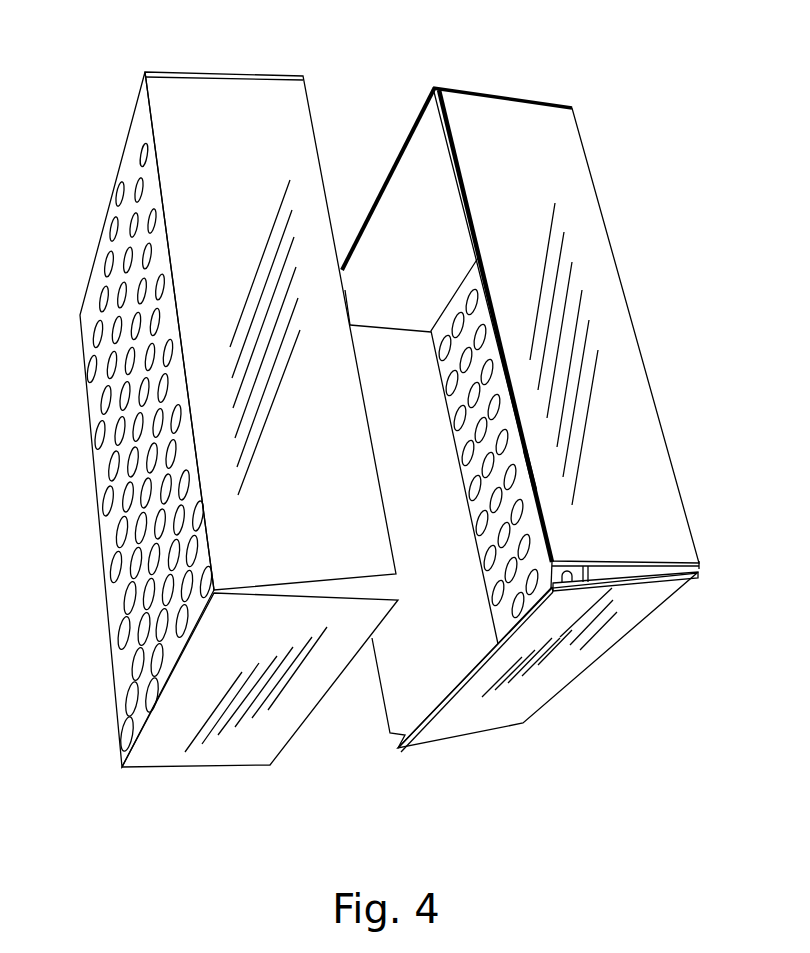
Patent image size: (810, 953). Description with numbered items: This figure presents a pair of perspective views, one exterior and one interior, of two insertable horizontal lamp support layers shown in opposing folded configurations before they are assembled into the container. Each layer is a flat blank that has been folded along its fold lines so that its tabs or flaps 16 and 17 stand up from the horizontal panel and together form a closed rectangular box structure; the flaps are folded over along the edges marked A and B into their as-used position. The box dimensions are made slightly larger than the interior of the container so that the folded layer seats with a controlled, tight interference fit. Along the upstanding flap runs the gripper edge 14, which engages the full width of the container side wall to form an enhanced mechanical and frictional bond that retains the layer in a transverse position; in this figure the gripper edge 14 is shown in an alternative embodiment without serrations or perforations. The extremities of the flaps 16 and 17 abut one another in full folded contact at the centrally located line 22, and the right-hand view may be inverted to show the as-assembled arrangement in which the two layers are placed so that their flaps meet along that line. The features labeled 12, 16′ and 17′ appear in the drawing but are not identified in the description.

The perforated panel 12 is at (497, 417).
The gripper edge 14 is at (155, 143).
The flap 16 is at (423, 747).
The bottom panel flange 16′ is at (523, 630).
The flap 17 is at (462, 110).
The spacer panel portion 17′ is at (530, 465).
The centrally located line 22 is at (500, 96).
The fold edge A is at (553, 596).
The fold edge B is at (700, 537).